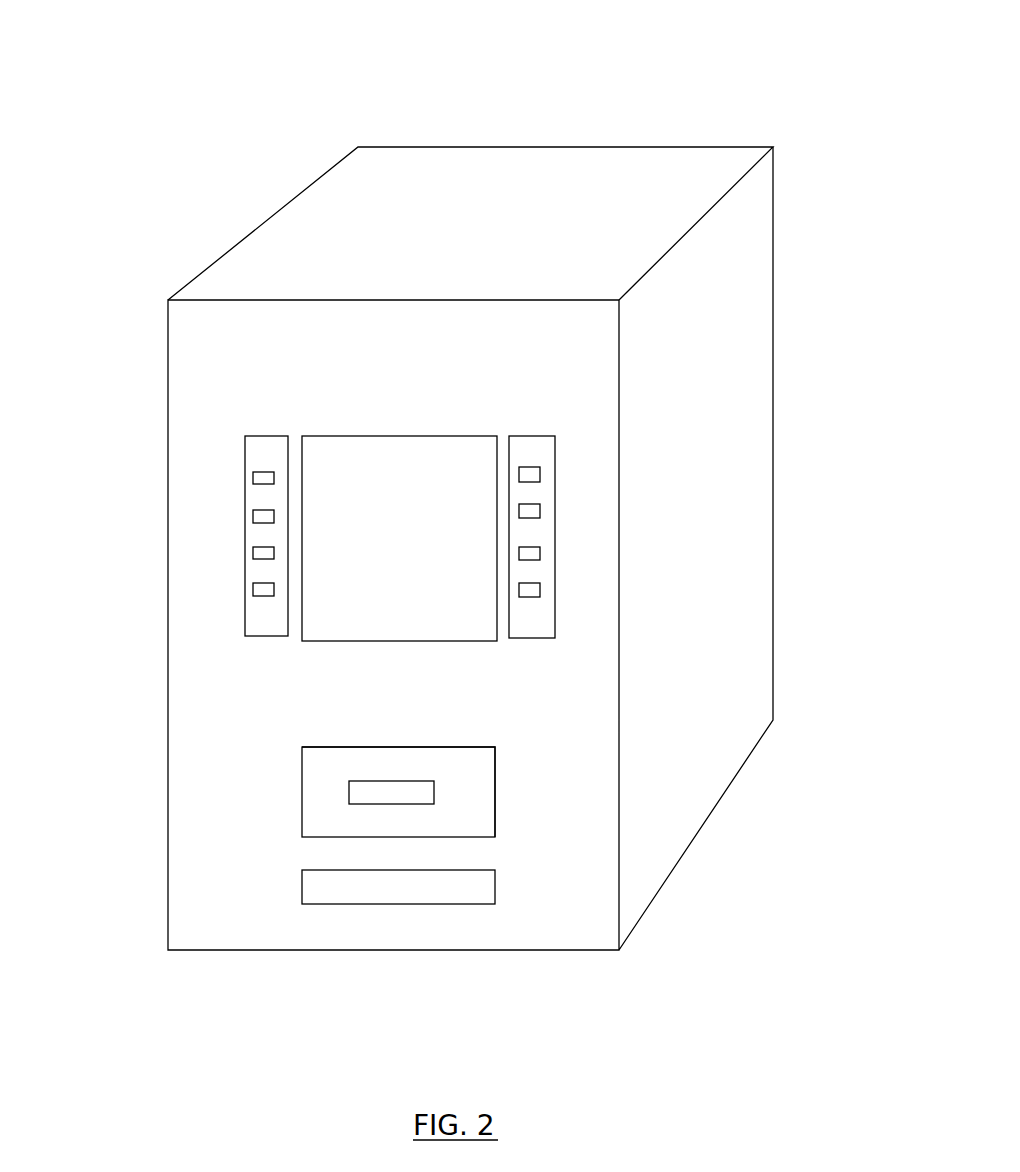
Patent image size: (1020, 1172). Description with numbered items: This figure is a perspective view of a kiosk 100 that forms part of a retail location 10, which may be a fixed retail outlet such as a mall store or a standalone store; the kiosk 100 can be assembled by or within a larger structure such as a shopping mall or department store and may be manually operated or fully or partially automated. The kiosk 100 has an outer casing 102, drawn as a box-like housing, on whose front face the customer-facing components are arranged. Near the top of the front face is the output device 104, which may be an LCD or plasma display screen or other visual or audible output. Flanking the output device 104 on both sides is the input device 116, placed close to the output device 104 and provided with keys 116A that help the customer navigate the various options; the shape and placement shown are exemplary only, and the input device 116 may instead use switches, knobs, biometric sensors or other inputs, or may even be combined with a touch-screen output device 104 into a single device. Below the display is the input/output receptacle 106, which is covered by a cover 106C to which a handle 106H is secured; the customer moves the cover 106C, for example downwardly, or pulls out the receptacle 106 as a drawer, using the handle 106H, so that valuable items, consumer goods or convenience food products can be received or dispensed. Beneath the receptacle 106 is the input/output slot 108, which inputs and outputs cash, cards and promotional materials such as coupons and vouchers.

The retail location 10 is at (278, 117).
The kiosk 100 is at (658, 192).
The outer casing 102 is at (727, 366).
The output device 104 is at (368, 592).
The input device 116 is at (257, 495).
The keys 116A is at (532, 553).
The input/output receptacle 106 is at (495, 793).
The cover 106C is at (478, 778).
The handle 106H is at (349, 803).
The input/output slot 108 is at (463, 895).